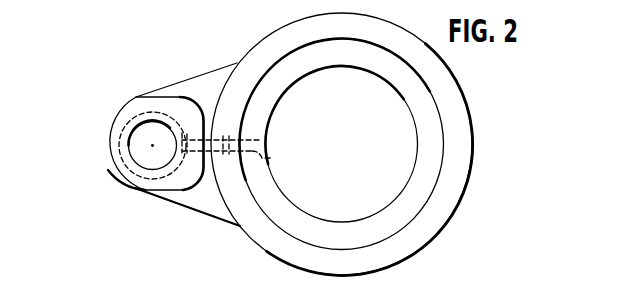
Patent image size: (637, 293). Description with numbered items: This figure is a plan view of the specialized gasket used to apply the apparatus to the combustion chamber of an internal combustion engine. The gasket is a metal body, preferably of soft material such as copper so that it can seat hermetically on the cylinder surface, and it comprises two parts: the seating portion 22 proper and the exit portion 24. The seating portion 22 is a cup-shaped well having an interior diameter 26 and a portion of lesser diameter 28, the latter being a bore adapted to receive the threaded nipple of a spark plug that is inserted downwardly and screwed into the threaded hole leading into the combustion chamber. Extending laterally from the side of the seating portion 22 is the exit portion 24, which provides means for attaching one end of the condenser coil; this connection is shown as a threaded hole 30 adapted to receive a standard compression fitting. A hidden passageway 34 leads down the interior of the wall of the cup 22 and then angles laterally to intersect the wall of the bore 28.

The seating portion 22 is at (450, 198).
The exit portion 24 is at (172, 185).
The interior diameter 26 is at (446, 131).
The portion of lesser diameter 28 is at (412, 175).
The threaded hole 30 is at (133, 135).
The passageway 34 is at (261, 158).